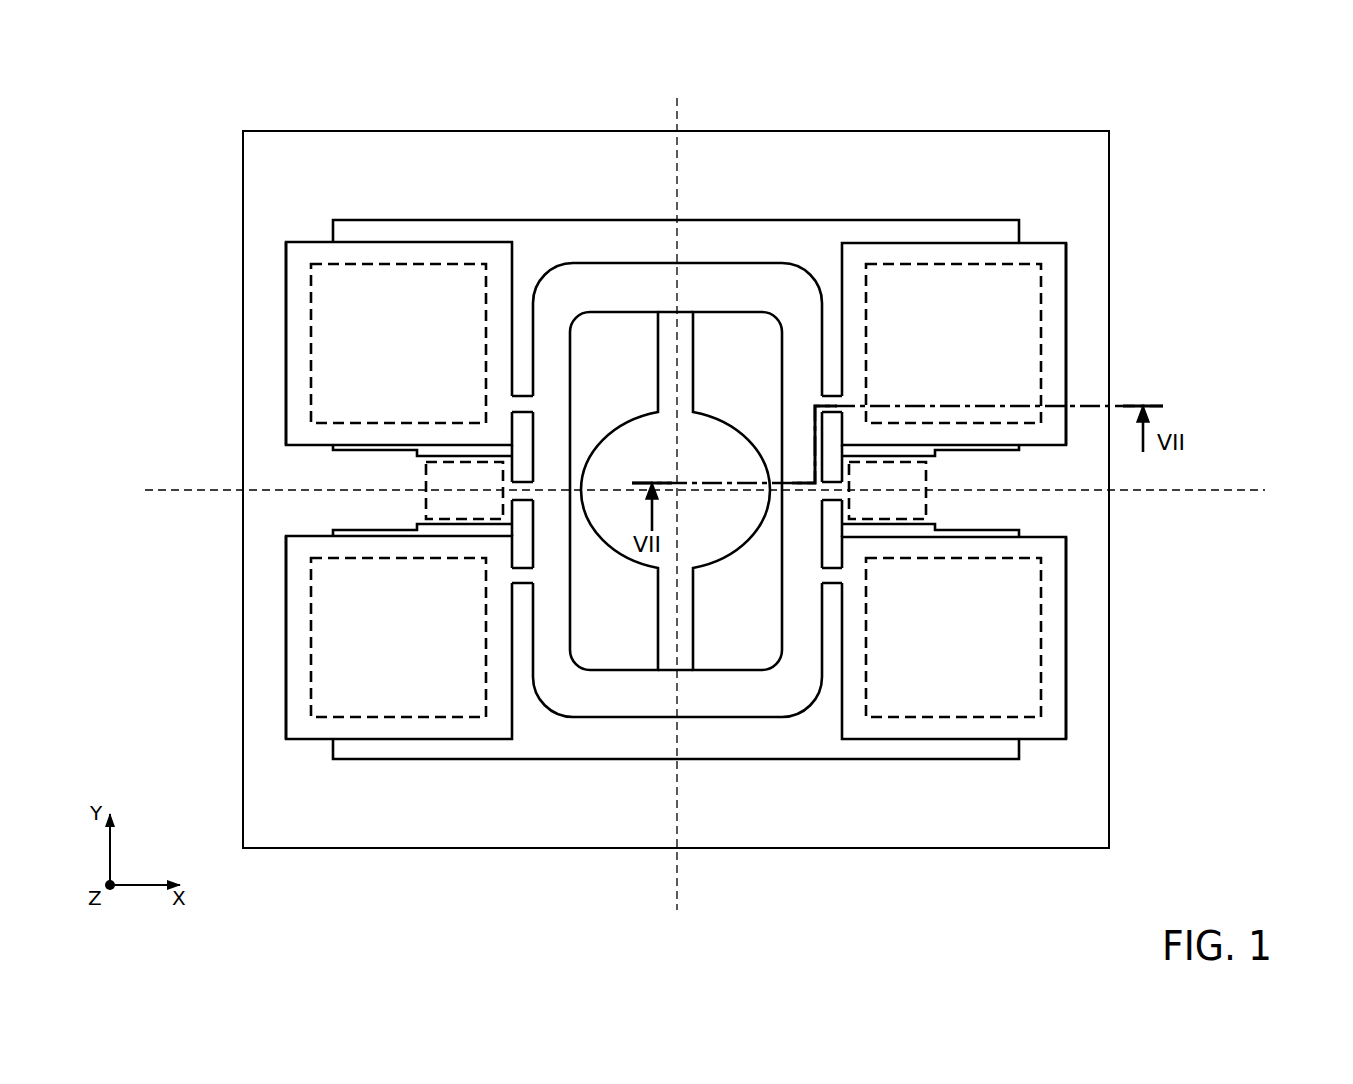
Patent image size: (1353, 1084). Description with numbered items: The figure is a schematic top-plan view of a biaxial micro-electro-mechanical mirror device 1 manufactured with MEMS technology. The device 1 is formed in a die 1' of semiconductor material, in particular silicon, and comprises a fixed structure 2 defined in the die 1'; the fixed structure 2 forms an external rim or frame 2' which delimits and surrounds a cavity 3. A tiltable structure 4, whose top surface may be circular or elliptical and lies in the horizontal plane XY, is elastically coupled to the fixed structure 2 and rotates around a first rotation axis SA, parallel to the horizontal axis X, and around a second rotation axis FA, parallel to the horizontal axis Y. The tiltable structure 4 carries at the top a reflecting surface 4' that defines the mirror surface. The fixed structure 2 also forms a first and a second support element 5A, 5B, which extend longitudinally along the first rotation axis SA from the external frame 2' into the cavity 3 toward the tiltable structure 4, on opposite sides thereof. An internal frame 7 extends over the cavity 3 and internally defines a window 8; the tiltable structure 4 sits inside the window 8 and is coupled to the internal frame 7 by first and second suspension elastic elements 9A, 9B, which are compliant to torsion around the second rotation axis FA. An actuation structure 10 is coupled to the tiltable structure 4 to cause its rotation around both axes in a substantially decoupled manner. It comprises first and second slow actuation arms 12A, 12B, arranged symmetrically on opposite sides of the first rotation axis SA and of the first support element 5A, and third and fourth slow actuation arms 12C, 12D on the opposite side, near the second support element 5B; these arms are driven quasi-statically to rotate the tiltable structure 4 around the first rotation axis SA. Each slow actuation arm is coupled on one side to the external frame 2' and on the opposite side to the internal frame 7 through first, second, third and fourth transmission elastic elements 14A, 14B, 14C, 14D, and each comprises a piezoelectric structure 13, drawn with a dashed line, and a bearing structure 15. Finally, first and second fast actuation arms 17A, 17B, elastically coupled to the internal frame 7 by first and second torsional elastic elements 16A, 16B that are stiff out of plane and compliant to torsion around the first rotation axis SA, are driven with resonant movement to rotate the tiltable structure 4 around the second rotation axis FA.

The micro-electro-mechanical mirror device 1 is at (1287, 152).
The die 1' is at (1178, 717).
The fixed structure 2 is at (729, 489).
The external frame 2' is at (1134, 188).
The cavity 3 is at (768, 238).
The tiltable structure 4 is at (737, 491).
The reflecting surface 4' is at (708, 522).
The first support element 5A is at (386, 518).
The second support element 5B is at (994, 485).
The internal frame 7 is at (795, 287).
The window 8 is at (610, 336).
The first suspension elastic element 9A is at (683, 363).
The second suspension elastic element 9B is at (668, 633).
The actuation structure 10 is at (985, 288).
The first slow actuation arm 12A is at (406, 252).
The second slow actuation arm 12B is at (427, 729).
The third slow actuation arm 12C is at (933, 252).
The fourth slow actuation arm 12D is at (944, 734).
The piezoelectric structure 13 is at (327, 312).
The first transmission elastic element 14A is at (521, 404).
The second transmission elastic element 14B is at (520, 574).
The third transmission elastic element 14C is at (837, 396).
The fourth transmission elastic element 14D is at (833, 583).
The bearing structure 15 is at (293, 270).
The first torsional elastic element 16A is at (523, 502).
The second torsional elastic element 16B is at (833, 503).
The first fast actuation arm 17A is at (452, 523).
The second fast actuation arm 17B is at (898, 525).
The second rotation axis FA is at (677, 108).
The first rotation axis SA is at (1208, 490).